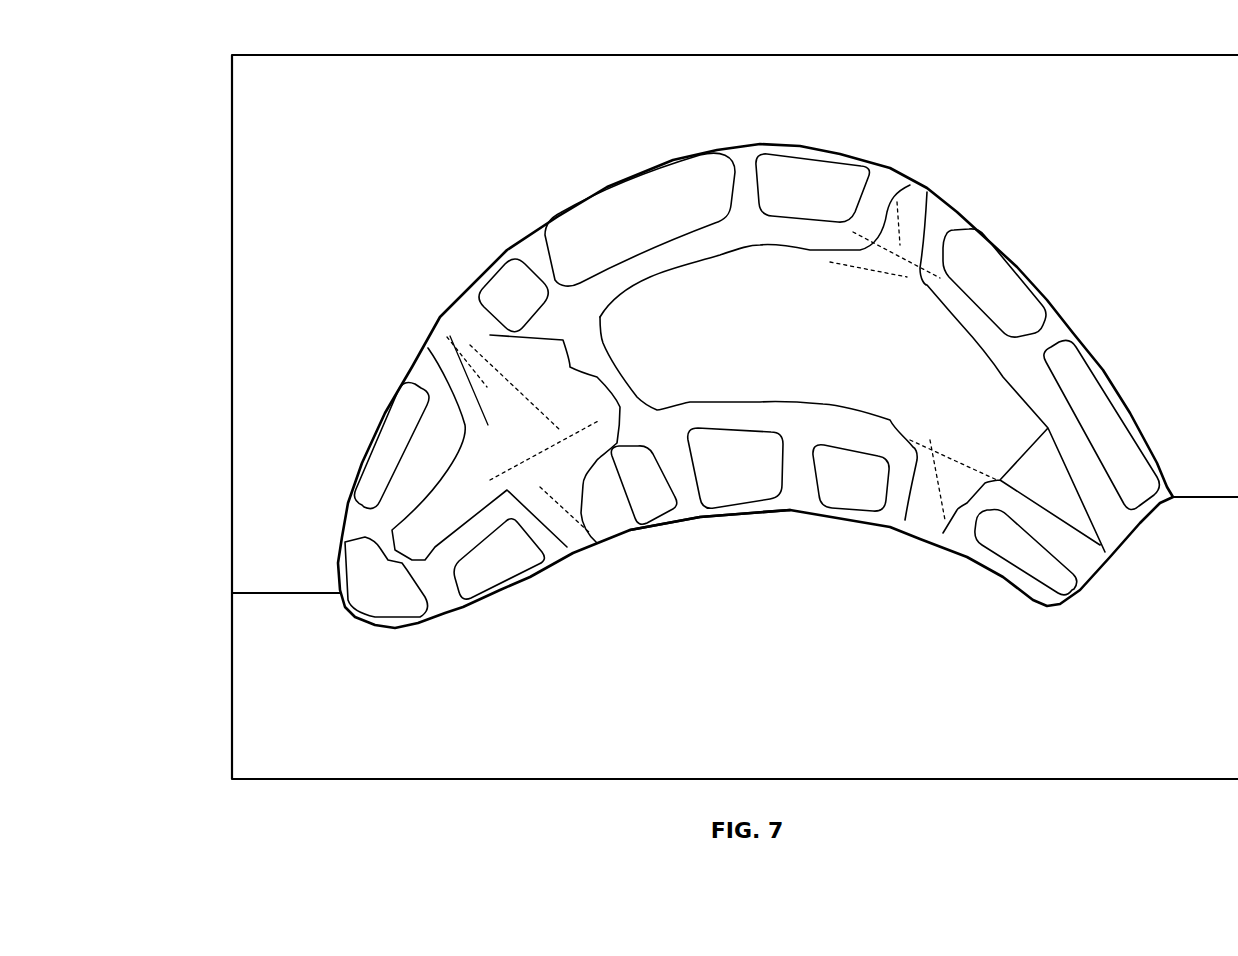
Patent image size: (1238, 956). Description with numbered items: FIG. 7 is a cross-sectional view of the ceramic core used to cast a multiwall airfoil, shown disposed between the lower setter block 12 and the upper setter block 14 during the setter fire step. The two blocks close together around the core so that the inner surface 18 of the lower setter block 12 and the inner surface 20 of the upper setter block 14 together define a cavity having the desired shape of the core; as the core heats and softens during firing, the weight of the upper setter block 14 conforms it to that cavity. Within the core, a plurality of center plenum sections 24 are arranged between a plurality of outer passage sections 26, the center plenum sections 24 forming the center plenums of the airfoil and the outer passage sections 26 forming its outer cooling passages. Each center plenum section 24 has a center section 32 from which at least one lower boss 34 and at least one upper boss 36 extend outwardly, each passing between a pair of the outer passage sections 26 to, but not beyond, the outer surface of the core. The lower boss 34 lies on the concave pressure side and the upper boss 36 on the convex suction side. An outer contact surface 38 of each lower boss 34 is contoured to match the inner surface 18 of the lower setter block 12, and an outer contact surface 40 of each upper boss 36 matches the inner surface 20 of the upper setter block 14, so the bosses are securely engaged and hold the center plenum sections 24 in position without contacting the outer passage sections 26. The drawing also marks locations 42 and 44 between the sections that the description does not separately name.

The lower setter block 12 is at (395, 780).
The upper setter block 14 is at (233, 198).
The inner surface of the lower setter block 18 is at (700, 517).
The inner surface of the upper setter block 20 is at (1063, 313).
The center plenum section 24 is at (569, 333).
The outer passage section 26 is at (635, 229).
The center section 32 is at (525, 426).
The lower boss 34 is at (567, 547).
The upper boss 36 is at (435, 368).
The outer contact surface of the lower boss 38 is at (593, 540).
The outer contact surface of the upper boss 40 is at (442, 330).
The channel 42 is at (573, 510).
The flow direction 44 is at (473, 365).